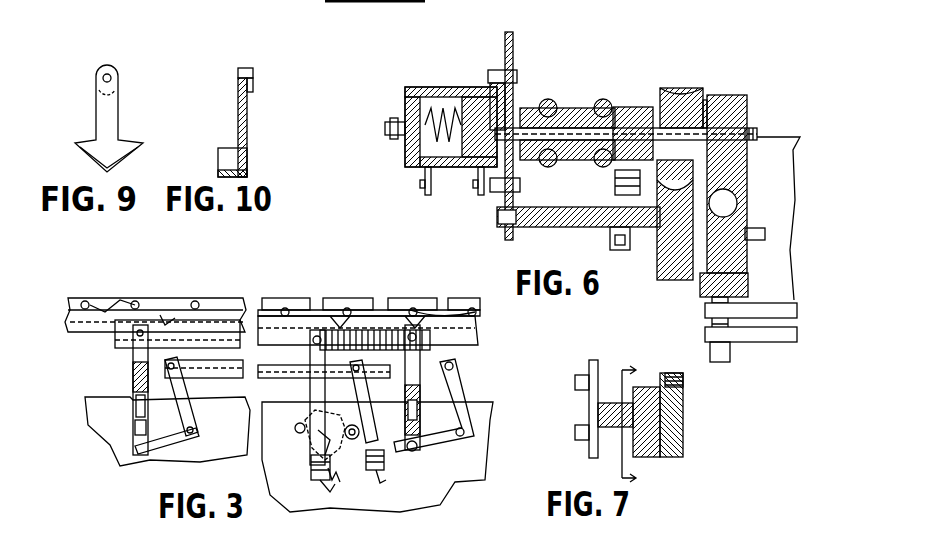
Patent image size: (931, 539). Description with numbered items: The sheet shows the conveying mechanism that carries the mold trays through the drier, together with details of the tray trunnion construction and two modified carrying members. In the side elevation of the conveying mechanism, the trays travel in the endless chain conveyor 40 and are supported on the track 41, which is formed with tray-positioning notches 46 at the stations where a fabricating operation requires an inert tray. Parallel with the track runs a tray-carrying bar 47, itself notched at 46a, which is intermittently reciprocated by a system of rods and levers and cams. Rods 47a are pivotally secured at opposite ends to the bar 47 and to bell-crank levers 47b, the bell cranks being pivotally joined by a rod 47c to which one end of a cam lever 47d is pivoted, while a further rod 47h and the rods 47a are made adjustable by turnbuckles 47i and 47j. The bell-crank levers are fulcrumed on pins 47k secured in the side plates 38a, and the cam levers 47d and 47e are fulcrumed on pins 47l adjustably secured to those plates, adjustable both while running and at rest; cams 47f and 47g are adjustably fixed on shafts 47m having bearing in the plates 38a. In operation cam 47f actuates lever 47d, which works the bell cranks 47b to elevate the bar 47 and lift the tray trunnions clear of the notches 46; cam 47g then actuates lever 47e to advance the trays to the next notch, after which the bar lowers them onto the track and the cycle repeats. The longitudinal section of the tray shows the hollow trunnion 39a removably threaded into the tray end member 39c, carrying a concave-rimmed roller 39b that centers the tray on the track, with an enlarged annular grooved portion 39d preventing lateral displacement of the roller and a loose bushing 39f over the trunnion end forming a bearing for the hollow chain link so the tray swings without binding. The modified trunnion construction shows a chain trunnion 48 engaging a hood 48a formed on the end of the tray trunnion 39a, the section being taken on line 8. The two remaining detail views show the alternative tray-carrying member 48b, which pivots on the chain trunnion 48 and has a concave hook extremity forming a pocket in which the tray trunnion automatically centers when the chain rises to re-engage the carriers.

In FIG. 7, the section line 8- 8 is at (635, 425).
In FIG. 3, the side plates 38a is at (86, 420).
In FIG. 6, the trunnion 39a is at (747, 120).
In FIG. 7, the trunnion 39a is at (683, 415).
In FIG. 6, the roller 39b is at (681, 97).
In FIG. 6, the end member 39c is at (738, 203).
In FIG. 6, the enlarged annular grooved portion 39d is at (640, 106).
In FIG. 6, the bushing 39f is at (560, 160).
In FIG. 3, the conveyor 40 is at (236, 298).
In FIG. 3, the track 41 is at (70, 332).
In FIG. 3, the tray-positioning notches 46 is at (165, 315).
In FIG. 3, the notches 46a is at (177, 335).
In FIG. 3, the tray-carrying bar 47 is at (115, 338).
In FIG. 3, the rod 47a is at (133, 370).
In FIG. 3, the bell-crank lever 47b is at (192, 396).
In FIG. 3, the rod 47c is at (343, 346).
In FIG. 3, the cam lever 47d is at (405, 392).
In FIG. 3, the cam lever 47e is at (300, 423).
In FIG. 3, the cam 47f is at (305, 430).
In FIG. 3, the cam 47g is at (305, 390).
In FIG. 3, the rod 47h is at (406, 310).
In FIG. 3, the turnbuckle 47i is at (466, 384).
In FIG. 3, the turnbuckle 47j is at (356, 310).
In FIG. 3, the pin 47k is at (195, 435).
In FIG. 3, the pin 47l is at (388, 472).
In FIG. 3, the shaft 47m is at (344, 484).
In FIG. 7, the trunnion 48 is at (603, 458).
In FIG. 7, the hood 48a is at (626, 400).
In FIG. 9, the tray-carrying member 48b is at (96, 107).
In FIG. 10, the tray-carrying member 48b is at (238, 112).